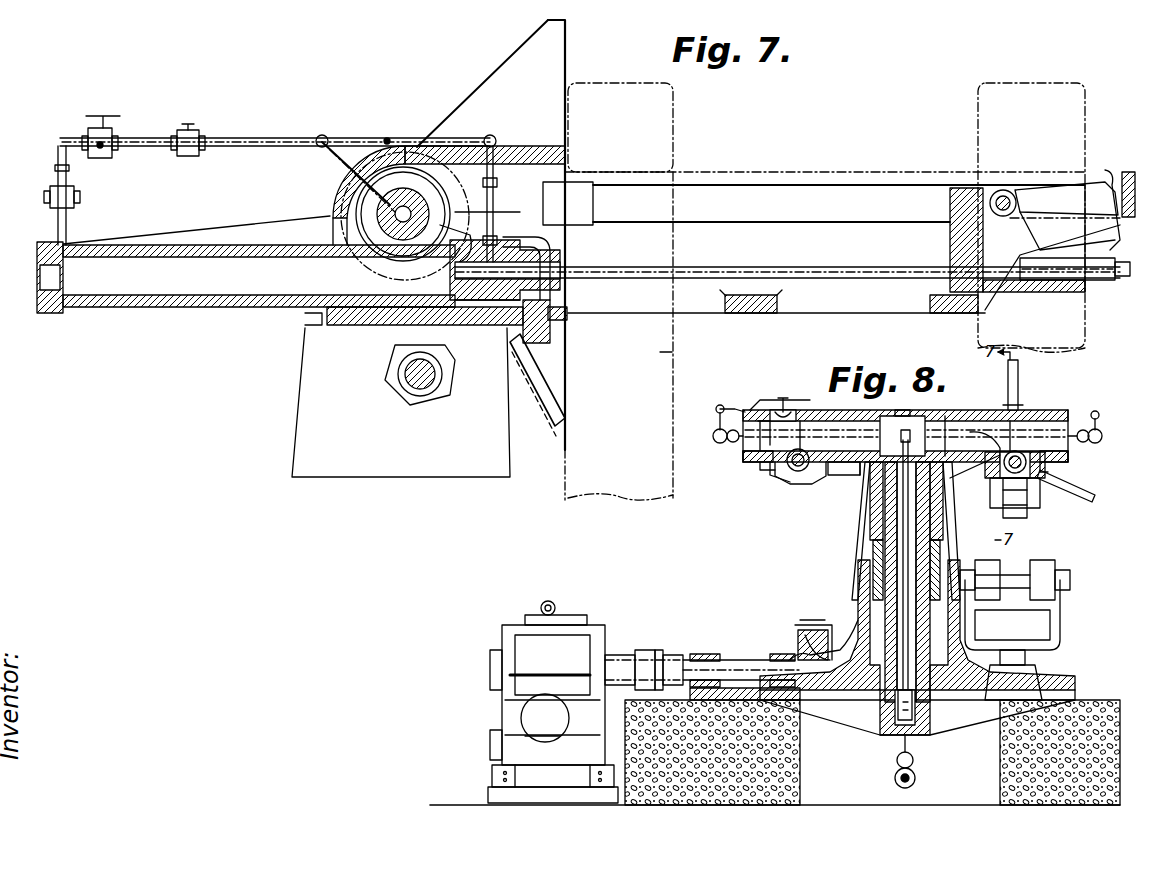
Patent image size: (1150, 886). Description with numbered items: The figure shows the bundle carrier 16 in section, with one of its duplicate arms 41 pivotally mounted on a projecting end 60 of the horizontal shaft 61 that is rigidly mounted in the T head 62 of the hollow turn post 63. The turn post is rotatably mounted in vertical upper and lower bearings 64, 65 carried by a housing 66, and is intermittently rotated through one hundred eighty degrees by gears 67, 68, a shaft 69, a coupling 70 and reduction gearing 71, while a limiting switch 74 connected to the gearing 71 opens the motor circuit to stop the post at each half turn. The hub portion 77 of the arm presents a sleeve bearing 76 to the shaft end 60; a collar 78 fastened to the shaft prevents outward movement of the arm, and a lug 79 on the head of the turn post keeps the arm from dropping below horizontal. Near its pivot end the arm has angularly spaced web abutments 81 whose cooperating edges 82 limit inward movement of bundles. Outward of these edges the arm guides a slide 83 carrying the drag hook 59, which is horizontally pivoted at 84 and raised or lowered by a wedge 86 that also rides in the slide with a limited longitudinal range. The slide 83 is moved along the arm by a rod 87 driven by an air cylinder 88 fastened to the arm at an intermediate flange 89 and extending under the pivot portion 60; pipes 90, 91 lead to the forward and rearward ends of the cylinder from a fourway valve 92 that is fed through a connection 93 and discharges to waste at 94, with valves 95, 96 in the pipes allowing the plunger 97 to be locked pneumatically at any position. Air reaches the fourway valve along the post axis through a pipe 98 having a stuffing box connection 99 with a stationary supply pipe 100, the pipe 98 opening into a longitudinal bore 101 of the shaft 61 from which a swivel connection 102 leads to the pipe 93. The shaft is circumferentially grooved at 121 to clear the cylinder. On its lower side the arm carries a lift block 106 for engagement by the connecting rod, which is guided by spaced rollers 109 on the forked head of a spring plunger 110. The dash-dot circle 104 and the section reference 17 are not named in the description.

In FIG. 7, the carrier 16 is at (830, 304).
In FIG. 7, the section line / frame member 17 is at (1000, 329).
In FIG. 7, the arm 41 is at (848, 180).
In FIG. 7, the drag hook 59 is at (1052, 205).
In FIG. 8, the projecting end of shaft 60 is at (768, 465).
In FIG. 7, the horizontal shaft 61 is at (432, 229).
In FIG. 8, the horizontal shaft 61 is at (946, 413).
In FIG. 8, the T head 62 is at (860, 415).
In FIG. 8, the hollow turn post 63 is at (872, 530).
In FIG. 8, the upper bearing 64 is at (940, 486).
In FIG. 8, the lower bearing 65 is at (930, 730).
In FIG. 7, the housing 66 is at (302, 398).
In FIG. 8, the housing 66 is at (870, 500).
In FIG. 8, the gear 67 is at (960, 675).
In FIG. 8, the gear 68 is at (798, 640).
In FIG. 8, the shaft 69 is at (733, 660).
In FIG. 8, the coupling 70 is at (640, 652).
In FIG. 8, the reduction gearing 71 is at (553, 702).
In FIG. 8, the limiting switch 74 is at (545, 718).
In FIG. 8, the sleeve bearing 76 is at (770, 409).
In FIG. 7, the hub portion 77 is at (345, 187).
In FIG. 8, the hub portion 77 is at (758, 408).
In FIG. 8, the collar 78 is at (743, 458).
In FIG. 7, the lug 79 is at (462, 322).
In FIG. 8, the lug 79 is at (845, 470).
In FIG. 7, the web abutment 81 is at (518, 50).
In FIG. 8, the web abutment 81 is at (1020, 390).
In FIG. 7, the cooperating edge 82 is at (575, 56).
In FIG. 7, the slide 83 is at (952, 242).
In FIG. 7, the pivot 84 is at (990, 208).
In FIG. 7, the wedge 86 is at (372, 318).
In FIG. 7, the rod 87 is at (752, 266).
In FIG. 7, the air cylinder 88 is at (215, 252).
In FIG. 8, the air cylinder 88 is at (800, 472).
In FIG. 7, the intermediate flange 89 is at (312, 320).
In FIG. 7, the pipe 90 is at (64, 226).
In FIG. 7, the pipe 91 is at (150, 130).
In FIG. 7, the fourway valve 92 is at (112, 126).
In FIG. 8, the fourway valve 92 is at (790, 404).
In FIG. 7, the connection 93 is at (332, 149).
In FIG. 8, the connection 93 is at (717, 416).
In FIG. 7, the waste discharge 94 is at (112, 148).
In FIG. 7, the valve 95 is at (72, 188).
In FIG. 7, the valve 96 is at (200, 135).
In FIG. 7, the plunger 97 is at (452, 270).
In FIG. 8, the pipe 98 is at (905, 570).
In FIG. 8, the stuffing box connection 99 is at (896, 722).
In FIG. 8, the stationary supply pipe 100 is at (918, 782).
In FIG. 7, the longitudinal bore 101 is at (403, 200).
In FIG. 8, the longitudinal bore 101 is at (905, 413).
In FIG. 8, the swivel connection 102 is at (713, 438).
In FIG. 7, the circular path 104 is at (440, 203).
In FIG. 7, the lift block 106 is at (428, 386).
In FIG. 8, the lift block 106 is at (1015, 512).
In FIG. 8, the roller 109 is at (990, 560).
In FIG. 8, the spring plunger 110 is at (1025, 598).
In FIG. 8, the circumferential groove 121 is at (768, 478).